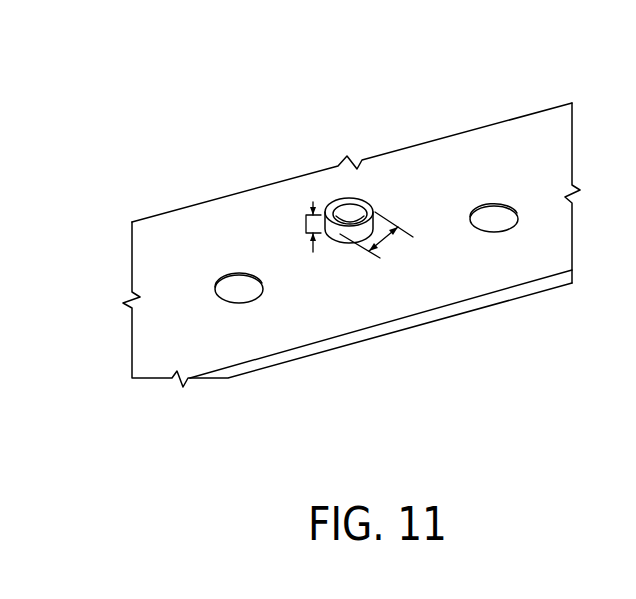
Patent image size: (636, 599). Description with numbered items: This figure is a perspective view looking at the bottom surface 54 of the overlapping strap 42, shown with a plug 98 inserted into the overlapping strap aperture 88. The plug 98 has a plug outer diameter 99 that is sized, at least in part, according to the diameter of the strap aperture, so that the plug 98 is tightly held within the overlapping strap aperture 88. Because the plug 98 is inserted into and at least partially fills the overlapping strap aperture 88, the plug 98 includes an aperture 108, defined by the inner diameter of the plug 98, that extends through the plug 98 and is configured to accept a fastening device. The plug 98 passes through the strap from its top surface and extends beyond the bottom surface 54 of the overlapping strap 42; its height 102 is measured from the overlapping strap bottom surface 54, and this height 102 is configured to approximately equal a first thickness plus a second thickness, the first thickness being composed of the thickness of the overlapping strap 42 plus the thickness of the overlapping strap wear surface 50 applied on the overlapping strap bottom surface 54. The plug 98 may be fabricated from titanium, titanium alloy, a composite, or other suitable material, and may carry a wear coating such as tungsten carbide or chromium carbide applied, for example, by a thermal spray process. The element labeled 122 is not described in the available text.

The overlapping strap 42 is at (128, 173).
The overlapping strap wear surface 50 is at (537, 130).
The bottom surface of the overlapping strap 54 is at (452, 177).
The aperture 108 is at (349, 215).
The boss bore 122 is at (363, 206).
The height 102 is at (306, 223).
The plug outer diameter 99 is at (382, 246).
The plug 98 is at (519, 220).
The overlapping strap aperture 88 is at (252, 302).